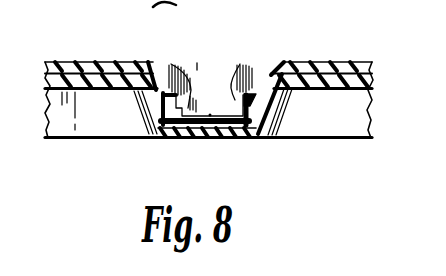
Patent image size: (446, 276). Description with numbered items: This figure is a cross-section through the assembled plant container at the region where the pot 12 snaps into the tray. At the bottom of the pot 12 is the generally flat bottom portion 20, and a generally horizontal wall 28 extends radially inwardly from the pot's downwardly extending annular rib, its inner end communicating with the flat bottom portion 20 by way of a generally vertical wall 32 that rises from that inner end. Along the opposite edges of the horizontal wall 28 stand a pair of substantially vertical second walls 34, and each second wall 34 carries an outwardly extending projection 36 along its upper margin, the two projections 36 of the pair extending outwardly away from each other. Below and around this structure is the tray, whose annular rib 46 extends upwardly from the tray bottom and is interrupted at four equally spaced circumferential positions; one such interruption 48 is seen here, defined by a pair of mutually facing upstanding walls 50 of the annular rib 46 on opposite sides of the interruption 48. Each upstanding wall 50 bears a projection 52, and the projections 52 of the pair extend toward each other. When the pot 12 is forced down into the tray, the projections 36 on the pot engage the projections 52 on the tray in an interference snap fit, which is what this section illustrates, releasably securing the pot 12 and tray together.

The pot 12 is at (58, 63).
The generally flat bottom portion 20 is at (333, 63).
The horizontal wall 28 is at (198, 107).
The generally vertical wall 32 is at (196, 68).
The second wall 34 is at (171, 64).
The projection 36 is at (142, 112).
The annular rib 46 is at (265, 110).
The interruption 48 is at (217, 137).
The upstanding wall 50 is at (286, 113).
The projection 52 is at (158, 80).